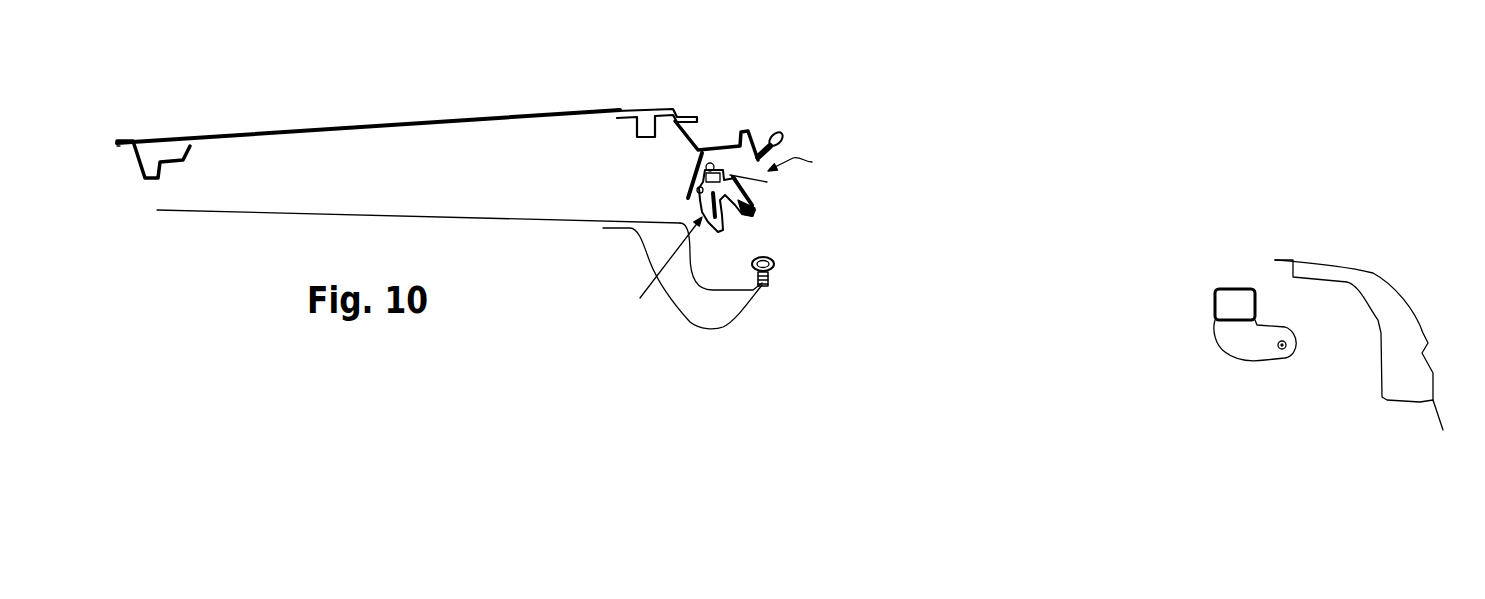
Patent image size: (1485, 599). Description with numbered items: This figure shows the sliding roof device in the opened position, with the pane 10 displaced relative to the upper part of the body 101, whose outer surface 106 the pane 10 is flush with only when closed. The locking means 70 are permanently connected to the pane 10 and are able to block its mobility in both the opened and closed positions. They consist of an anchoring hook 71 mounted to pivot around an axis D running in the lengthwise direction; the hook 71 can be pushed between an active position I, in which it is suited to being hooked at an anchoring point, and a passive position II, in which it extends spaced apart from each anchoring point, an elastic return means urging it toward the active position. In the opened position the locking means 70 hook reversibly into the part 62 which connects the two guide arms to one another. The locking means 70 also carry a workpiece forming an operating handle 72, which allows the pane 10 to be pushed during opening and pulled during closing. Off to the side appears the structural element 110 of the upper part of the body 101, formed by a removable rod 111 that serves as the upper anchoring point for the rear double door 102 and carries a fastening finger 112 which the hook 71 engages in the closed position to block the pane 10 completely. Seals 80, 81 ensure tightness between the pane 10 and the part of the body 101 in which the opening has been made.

The pane 10 is at (480, 117).
The upper part of the body 101 is at (320, 210).
The outer surface 106 is at (541, 215).
The seal 80 is at (778, 135).
The axis D is at (710, 162).
The part connecting the two guide arms 62 is at (702, 178).
The locking means 70 is at (750, 229).
The operating handle 72 is at (747, 207).
The passive position II is at (802, 162).
The anchoring hook 71 is at (701, 208).
The active position I is at (665, 269).
The seal 81 is at (775, 265).
The rear double door 102 is at (1387, 277).
The removable rod 111 is at (1214, 302).
The structural element 110 is at (1235, 326).
The fastening finger 112 is at (1282, 350).